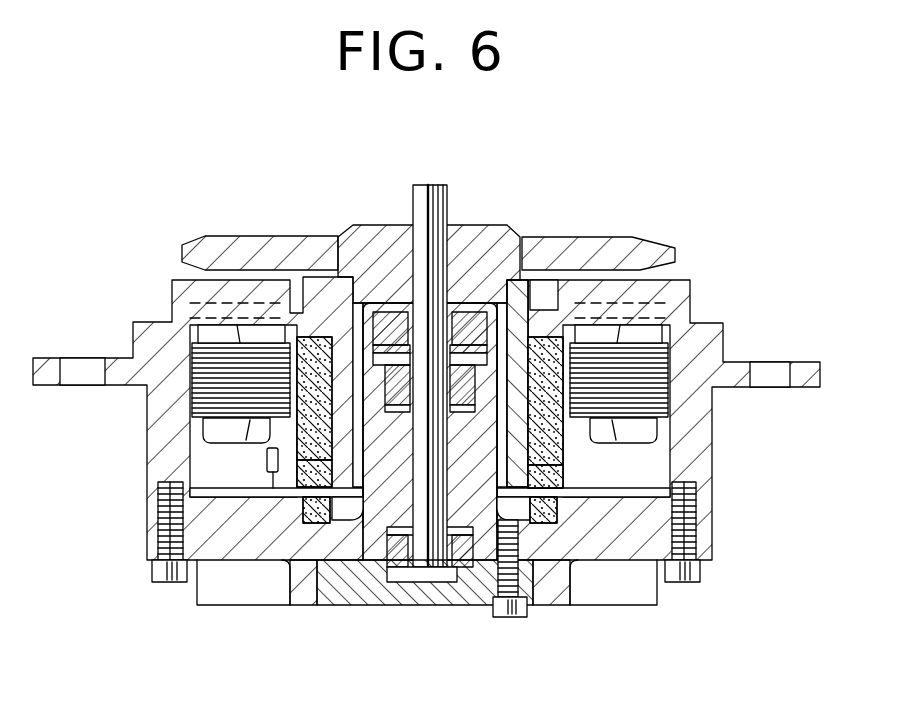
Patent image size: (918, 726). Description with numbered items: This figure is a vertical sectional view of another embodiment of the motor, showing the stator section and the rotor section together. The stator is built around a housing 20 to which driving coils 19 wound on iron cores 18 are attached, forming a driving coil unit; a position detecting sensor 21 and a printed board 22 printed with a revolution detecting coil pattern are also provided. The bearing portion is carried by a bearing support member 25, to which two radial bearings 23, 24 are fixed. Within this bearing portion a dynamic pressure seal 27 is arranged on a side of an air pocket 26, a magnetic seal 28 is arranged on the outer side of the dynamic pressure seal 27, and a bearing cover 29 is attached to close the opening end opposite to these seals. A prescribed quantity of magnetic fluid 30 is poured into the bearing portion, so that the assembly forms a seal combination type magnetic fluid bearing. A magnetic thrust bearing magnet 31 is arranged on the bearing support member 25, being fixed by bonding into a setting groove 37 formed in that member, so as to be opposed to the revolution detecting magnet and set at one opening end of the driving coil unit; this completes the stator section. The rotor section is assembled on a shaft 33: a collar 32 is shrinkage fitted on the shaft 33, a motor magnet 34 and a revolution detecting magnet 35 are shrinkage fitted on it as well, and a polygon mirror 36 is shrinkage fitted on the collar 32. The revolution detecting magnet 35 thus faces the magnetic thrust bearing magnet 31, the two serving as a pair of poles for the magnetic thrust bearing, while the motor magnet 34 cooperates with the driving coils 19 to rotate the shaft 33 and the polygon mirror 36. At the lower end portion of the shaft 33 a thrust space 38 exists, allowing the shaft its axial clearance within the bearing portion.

The iron core 18 is at (193, 382).
The driving coil 19 is at (218, 425).
The housing 20 is at (153, 330).
The position detecting sensor 21 is at (263, 460).
The printed board 22 is at (230, 500).
The radial bearing 23 is at (545, 330).
The radial bearing 24 is at (477, 597).
The bearing support member 25 is at (222, 562).
The air pocket 26 is at (393, 355).
The dynamic pressure seal 27 is at (480, 325).
The magnetic seal 28 is at (452, 330).
The bearing cover 29 is at (393, 585).
The magnetic fluid 30 is at (405, 467).
The magnetic thrust bearing magnet 31 is at (320, 525).
The collar 32 is at (393, 237).
The shaft 33 is at (428, 183).
The motor magnet 34 is at (563, 441).
The revolution detecting magnet 35 is at (563, 479).
The polygon mirror 36 is at (253, 247).
The setting groove 37 is at (318, 535).
The thrust space 38 is at (428, 575).